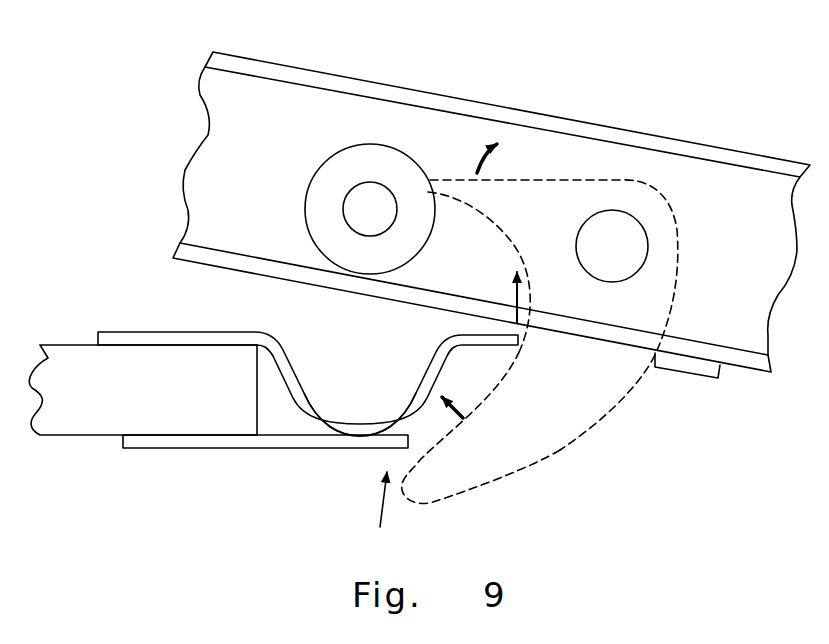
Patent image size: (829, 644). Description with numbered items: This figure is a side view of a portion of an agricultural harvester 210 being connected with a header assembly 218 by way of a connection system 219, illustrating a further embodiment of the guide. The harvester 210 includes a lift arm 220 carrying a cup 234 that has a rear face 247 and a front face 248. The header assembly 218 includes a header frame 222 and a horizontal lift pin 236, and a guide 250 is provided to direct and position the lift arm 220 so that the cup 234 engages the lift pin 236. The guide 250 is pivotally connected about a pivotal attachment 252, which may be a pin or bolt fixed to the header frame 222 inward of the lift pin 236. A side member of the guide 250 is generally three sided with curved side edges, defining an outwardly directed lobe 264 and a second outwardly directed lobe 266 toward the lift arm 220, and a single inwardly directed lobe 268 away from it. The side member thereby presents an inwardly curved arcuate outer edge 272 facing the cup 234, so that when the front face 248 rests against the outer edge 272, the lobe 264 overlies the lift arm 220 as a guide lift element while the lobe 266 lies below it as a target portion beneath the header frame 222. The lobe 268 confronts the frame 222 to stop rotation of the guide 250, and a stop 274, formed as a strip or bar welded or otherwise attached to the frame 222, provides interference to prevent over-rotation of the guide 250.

The agricultural harvester 210 is at (85, 450).
The header assembly 218 is at (690, 114).
The connection system 219 is at (414, 477).
The lift arm 220 is at (88, 365).
The header frame 222 is at (338, 93).
The cup 234 is at (332, 423).
The horizontal lift pin 236 is at (343, 165).
The rear face 247 is at (297, 363).
The front face 248 is at (427, 367).
The guide 250 is at (655, 328).
The pivotal attachment 252 is at (613, 245).
The lobe 264 is at (465, 187).
The lobe 266 is at (432, 482).
The lobe 268 is at (682, 243).
The arcuate outer edge 272 is at (508, 242).
The stop 274 is at (688, 368).